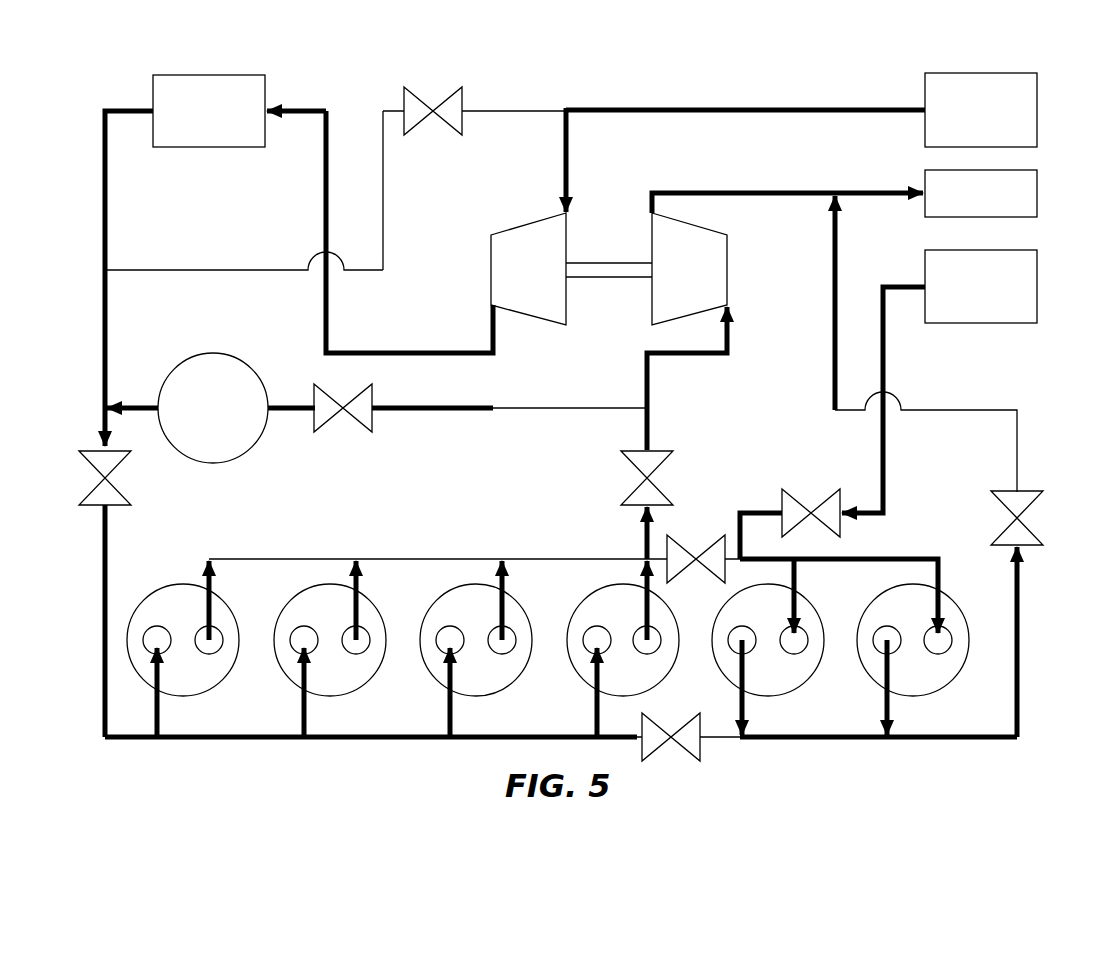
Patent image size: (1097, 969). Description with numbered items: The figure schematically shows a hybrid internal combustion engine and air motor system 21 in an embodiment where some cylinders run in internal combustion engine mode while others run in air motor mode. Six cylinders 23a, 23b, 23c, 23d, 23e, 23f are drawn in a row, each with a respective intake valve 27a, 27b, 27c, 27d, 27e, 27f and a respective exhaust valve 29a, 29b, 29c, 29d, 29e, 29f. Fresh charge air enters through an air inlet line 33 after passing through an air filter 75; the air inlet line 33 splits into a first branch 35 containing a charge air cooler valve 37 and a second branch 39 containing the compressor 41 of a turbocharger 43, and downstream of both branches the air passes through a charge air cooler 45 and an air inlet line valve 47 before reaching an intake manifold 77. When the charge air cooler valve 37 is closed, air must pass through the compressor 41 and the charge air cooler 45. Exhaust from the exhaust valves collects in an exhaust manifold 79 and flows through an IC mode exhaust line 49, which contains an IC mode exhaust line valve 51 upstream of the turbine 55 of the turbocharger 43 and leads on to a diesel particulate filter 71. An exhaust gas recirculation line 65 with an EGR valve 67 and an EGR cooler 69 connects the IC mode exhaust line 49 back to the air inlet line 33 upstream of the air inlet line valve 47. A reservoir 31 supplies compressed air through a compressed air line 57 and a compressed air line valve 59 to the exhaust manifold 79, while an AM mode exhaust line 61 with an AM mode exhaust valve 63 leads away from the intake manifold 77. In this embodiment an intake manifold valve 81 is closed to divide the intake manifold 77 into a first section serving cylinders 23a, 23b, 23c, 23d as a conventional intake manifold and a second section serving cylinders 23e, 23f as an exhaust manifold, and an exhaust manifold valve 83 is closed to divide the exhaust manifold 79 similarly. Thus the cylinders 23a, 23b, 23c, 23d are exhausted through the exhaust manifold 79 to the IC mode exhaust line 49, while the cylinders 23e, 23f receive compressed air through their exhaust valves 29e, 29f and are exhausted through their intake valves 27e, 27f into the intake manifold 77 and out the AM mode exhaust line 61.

The hybrid internal combustion engine and air motor system 21 is at (629, 66).
The cylinder 23a is at (206, 692).
The cylinder 23b is at (353, 692).
The cylinder 23c is at (499, 692).
The cylinder 23d is at (656, 690).
The cylinder 23e is at (791, 692).
The cylinder 23f is at (936, 692).
The intake valve 27a is at (167, 624).
The intake valve 27b is at (314, 624).
The intake valve 27c is at (460, 624).
The intake valve 27d is at (607, 624).
The intake valve 27e is at (752, 624).
The intake valve 27f is at (897, 624).
The exhaust valve 29a is at (218, 654).
The exhaust valve 29b is at (365, 654).
The exhaust valve 29c is at (511, 654).
The exhaust valve 29d is at (660, 654).
The exhaust valve 29e is at (803, 654).
The exhaust valve 29f is at (948, 654).
The reservoir 31 is at (1040, 262).
The air inlet line 33 is at (762, 108).
The first branch 35 is at (497, 109).
The charge air cooler valve 37 is at (416, 98).
The second branch 39 is at (562, 157).
The compressor 41 is at (490, 263).
The turbocharger 43 is at (598, 226).
The charge air cooler 45 is at (246, 75).
The air inlet line valve 47 is at (120, 468).
The IC mode exhaust line 49 is at (653, 380).
The IC mode exhaust line valve 51 is at (672, 470).
The turbine 55 is at (727, 258).
The compressed air line 57 is at (893, 345).
The compressed air line valve 59 is at (805, 500).
The AM mode exhaust line 61 is at (1022, 640).
The AM mode exhaust valve 63 is at (1032, 505).
The exhaust gas recirculation (EGR) line 65 is at (506, 406).
The EGR valve 67 is at (375, 400).
The EGR cooler 69 is at (213, 352).
The diesel particulate filter 71 is at (1030, 170).
The air filter 75 is at (995, 73).
The intake manifold 77 is at (325, 740).
The exhaust manifold 79 is at (388, 556).
The intake manifold valve 81 is at (660, 752).
The exhaust manifold valve 83 is at (686, 545).